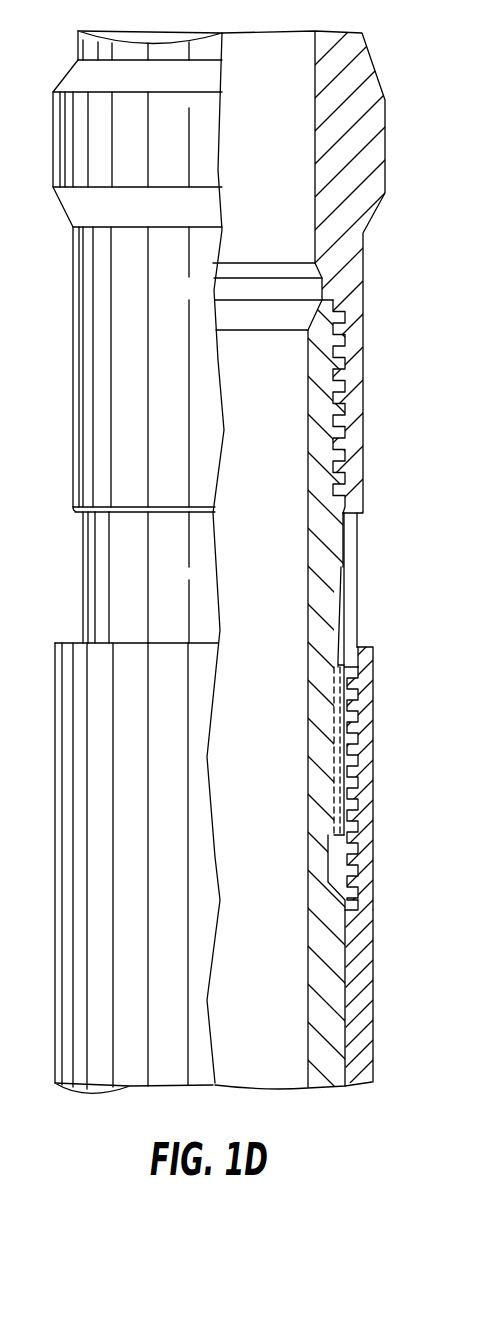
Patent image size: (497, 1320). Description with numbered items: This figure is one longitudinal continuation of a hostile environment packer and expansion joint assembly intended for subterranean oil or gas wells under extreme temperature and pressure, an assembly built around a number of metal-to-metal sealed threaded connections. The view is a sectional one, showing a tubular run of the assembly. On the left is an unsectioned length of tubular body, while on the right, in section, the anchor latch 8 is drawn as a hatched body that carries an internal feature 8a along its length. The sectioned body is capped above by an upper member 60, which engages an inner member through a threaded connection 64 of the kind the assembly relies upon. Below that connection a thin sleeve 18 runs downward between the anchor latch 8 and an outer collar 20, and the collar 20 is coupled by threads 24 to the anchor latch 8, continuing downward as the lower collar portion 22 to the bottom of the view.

The upper coupling body 60 is at (362, 95).
The threaded connection 64 is at (345, 371).
The sleeve 18 is at (348, 590).
The slot 8a is at (318, 658).
The threads 24 is at (363, 702).
The collar 20 is at (367, 762).
The anchor latch 8 is at (310, 838).
The lower collar 22 is at (362, 943).